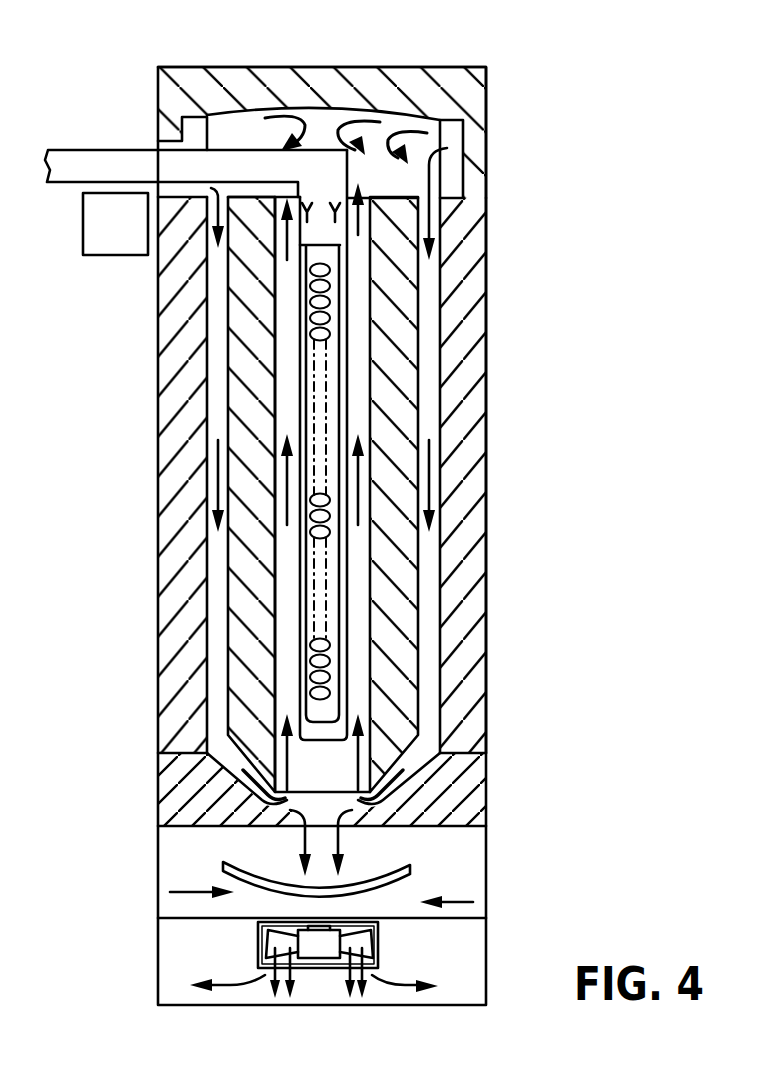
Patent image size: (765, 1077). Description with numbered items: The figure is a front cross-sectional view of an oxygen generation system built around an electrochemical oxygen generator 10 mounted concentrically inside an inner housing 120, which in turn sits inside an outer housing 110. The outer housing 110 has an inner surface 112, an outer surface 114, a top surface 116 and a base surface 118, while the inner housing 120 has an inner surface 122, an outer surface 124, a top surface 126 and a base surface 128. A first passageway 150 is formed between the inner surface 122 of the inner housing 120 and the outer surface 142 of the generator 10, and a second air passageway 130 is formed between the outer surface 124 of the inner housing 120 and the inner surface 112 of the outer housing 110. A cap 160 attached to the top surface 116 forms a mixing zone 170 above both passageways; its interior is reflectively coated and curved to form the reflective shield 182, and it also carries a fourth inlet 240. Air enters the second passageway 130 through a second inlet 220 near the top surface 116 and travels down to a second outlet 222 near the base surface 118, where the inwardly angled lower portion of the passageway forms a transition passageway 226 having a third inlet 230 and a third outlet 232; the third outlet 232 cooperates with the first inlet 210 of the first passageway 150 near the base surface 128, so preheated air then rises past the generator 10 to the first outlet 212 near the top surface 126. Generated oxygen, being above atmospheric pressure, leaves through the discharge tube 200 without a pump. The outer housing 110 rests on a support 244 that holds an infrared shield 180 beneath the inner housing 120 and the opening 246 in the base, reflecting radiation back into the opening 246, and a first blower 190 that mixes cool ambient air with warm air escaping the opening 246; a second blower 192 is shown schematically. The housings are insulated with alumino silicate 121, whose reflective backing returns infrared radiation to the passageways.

The electrochemical oxygen generator 10 is at (330, 687).
The outer housing 110 is at (460, 415).
The inner surface 112 is at (480, 342).
The outer surface 114 is at (486, 283).
The top surface 116 is at (470, 198).
The base surface 118 is at (433, 831).
The inner housing 120 is at (240, 630).
The alumino silicate insulation 121 is at (422, 457).
The inner surface 122 is at (273, 665).
The outer surface 124 is at (213, 580).
The top surface 126 is at (250, 215).
The base surface 128 is at (210, 818).
The second air passageway 130 is at (427, 553).
The outer surface of the generator 142 is at (347, 645).
The first passageway 150 is at (358, 607).
The cap 160 is at (448, 82).
The mixing zone 170 is at (320, 132).
The infrared shield 180 is at (410, 872).
The reflective shield 182 is at (268, 113).
The first blower 190 is at (260, 947).
The second blower 192 is at (83, 228).
The discharge tube 200 is at (83, 157).
The first inlet 210 is at (390, 812).
The first outlet 212 is at (287, 186).
The second inlet 220 is at (212, 190).
The second outlet 222 is at (210, 737).
The transition passageway 226 is at (412, 760).
The third inlet 230 is at (218, 767).
The third outlet 232 is at (207, 827).
The fourth inlet 240 is at (157, 142).
The support 244 is at (160, 897).
The opening 246 is at (345, 840).